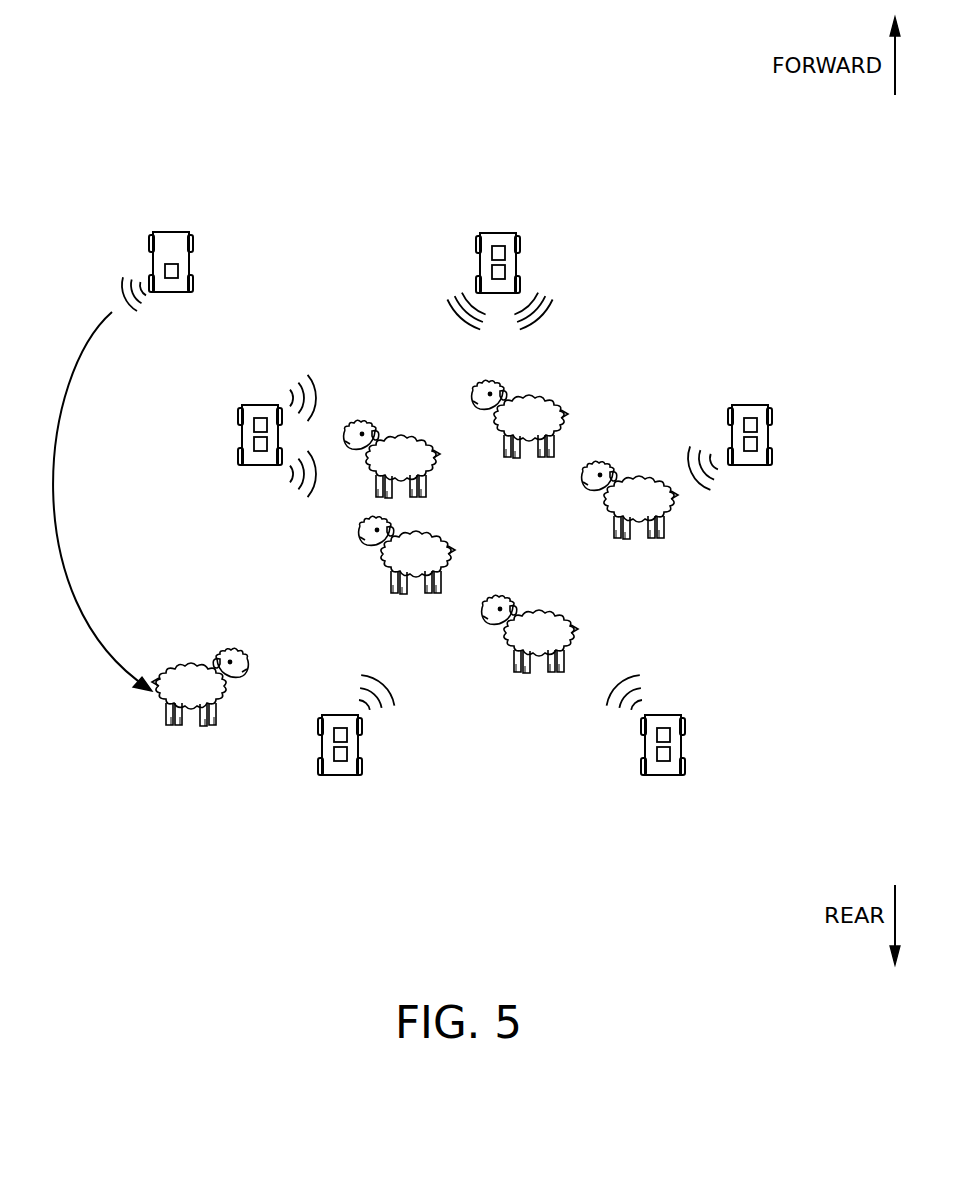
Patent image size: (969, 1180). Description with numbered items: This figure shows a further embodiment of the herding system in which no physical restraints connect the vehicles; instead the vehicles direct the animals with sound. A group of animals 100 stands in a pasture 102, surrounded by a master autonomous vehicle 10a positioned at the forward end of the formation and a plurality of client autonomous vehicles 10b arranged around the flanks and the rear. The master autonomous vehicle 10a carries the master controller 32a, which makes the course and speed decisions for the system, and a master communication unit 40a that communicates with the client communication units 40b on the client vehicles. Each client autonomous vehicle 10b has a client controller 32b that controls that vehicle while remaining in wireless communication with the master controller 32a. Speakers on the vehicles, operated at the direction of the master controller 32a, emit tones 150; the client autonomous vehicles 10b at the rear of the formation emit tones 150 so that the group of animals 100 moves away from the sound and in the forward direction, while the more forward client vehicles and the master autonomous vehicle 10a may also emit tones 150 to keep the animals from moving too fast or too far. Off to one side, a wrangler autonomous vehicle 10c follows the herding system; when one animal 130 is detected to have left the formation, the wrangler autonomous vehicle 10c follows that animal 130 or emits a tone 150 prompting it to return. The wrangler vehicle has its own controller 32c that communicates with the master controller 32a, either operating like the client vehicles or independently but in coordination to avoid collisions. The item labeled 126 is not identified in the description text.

The master autonomous vehicle 10a is at (480, 260).
The client autonomous vehicle 10b is at (242, 437).
The wrangler autonomous vehicle 10c is at (186, 232).
The master controller 32a is at (497, 286).
The client controller 32b is at (259, 455).
The controller 32c is at (178, 270).
The master communication unit 40a is at (505, 252).
The client communication unit 40b is at (260, 418).
The group of animals 100 is at (620, 578).
The pasture 102 is at (556, 788).
The perimeter boundary 126 is at (720, 550).
The animal 130 is at (170, 723).
The tones 150 is at (117, 278).